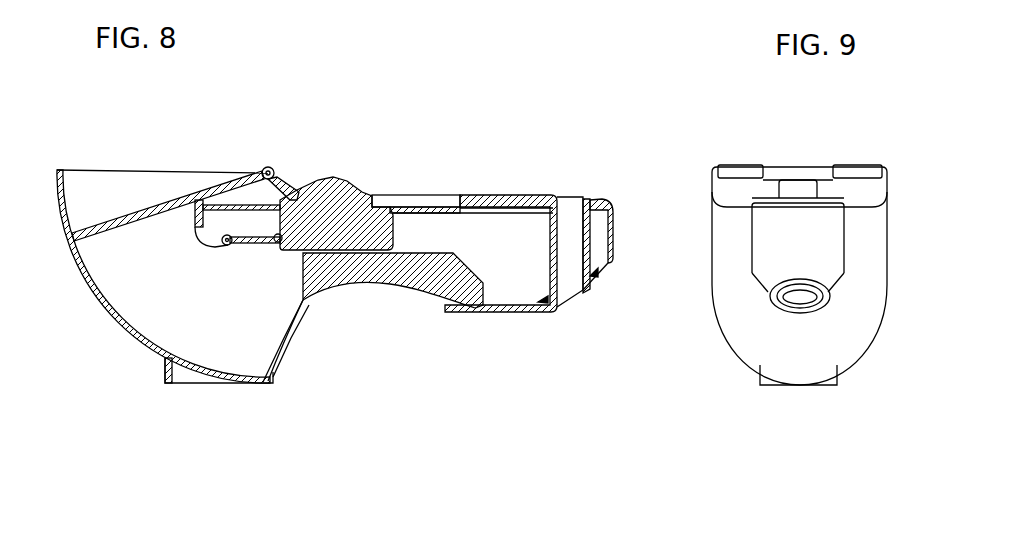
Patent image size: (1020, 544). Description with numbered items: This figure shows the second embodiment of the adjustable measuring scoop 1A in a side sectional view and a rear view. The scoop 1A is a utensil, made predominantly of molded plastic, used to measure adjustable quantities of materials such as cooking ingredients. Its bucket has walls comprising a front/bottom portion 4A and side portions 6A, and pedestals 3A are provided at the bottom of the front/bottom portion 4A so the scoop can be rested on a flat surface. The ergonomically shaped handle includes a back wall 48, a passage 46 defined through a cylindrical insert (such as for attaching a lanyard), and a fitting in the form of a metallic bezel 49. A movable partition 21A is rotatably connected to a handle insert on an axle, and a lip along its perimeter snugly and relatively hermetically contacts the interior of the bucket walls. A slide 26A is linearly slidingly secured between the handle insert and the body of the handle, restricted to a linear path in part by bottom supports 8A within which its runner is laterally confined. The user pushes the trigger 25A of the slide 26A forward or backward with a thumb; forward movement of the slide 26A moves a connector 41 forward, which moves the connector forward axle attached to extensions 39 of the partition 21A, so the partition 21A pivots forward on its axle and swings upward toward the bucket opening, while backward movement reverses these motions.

In FIG. 8, the scoop 1A is at (142, 343).
In FIG. 9, the scoop 1A is at (705, 262).
In FIG. 8, the pedestals 3A is at (167, 382).
In FIG. 9, the pedestals 3A is at (837, 387).
In FIG. 8, the front/bottom portion 4A is at (118, 325).
In FIG. 9, the side portions 6A is at (712, 297).
In FIG. 8, the bottom supports 8A is at (408, 273).
In FIG. 8, the movable partition 21A is at (170, 200).
In FIG. 8, the trigger 25A is at (333, 182).
In FIG. 8, the slide 26A is at (440, 204).
In FIG. 8, the extensions 39 is at (198, 225).
In FIG. 8, the connector 41 is at (250, 248).
In FIG. 8, the passage 46 is at (578, 202).
In FIG. 8, the back wall 48 is at (283, 350).
In FIG. 9, the back wall 48 is at (813, 328).
In FIG. 9, the metallic bezel 49 is at (777, 300).